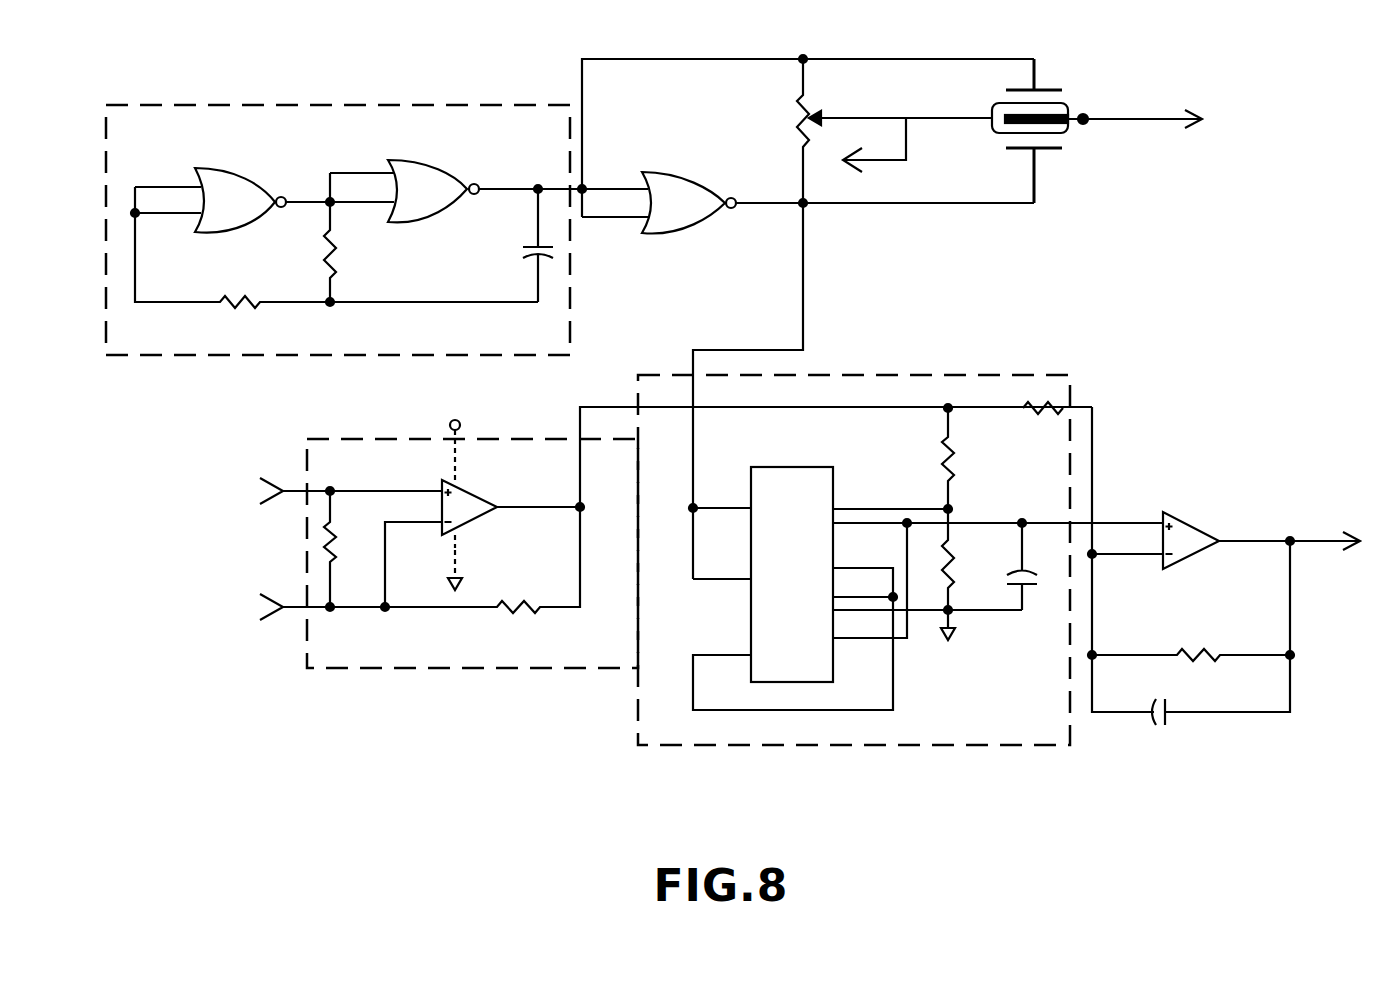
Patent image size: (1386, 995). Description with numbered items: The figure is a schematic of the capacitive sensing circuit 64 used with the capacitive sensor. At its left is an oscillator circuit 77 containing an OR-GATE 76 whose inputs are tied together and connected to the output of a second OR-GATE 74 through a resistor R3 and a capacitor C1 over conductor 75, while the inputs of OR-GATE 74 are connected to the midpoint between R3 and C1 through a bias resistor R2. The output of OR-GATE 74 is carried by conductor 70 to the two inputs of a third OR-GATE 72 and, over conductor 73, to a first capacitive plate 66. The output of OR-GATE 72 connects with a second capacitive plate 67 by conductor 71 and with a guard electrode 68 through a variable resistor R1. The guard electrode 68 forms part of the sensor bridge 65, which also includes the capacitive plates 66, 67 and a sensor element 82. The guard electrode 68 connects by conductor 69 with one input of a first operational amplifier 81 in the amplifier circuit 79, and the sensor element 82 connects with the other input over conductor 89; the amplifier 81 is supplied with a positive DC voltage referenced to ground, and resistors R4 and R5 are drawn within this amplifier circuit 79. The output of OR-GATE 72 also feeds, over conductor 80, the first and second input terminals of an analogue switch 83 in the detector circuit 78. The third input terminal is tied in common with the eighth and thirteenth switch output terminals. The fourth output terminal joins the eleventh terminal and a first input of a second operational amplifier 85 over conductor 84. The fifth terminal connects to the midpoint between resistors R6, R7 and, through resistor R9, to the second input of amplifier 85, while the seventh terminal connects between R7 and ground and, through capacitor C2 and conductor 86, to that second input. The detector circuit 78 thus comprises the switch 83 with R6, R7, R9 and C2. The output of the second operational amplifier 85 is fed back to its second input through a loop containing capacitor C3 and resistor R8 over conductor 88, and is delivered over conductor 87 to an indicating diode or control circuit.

The capacitive sensing circuit 64 is at (1163, 822).
The sensor bridge 65 is at (760, 260).
The first capacitive plate 66 is at (1036, 72).
The second capacitive plate 67 is at (1044, 150).
The guard electrode 68 is at (1003, 102).
The conductor 69 is at (893, 163).
The conductor 70 is at (516, 188).
The conductor 71 is at (898, 206).
The third OR-GATE 72 is at (700, 234).
The conductor 73 is at (690, 58).
The second OR-GATE 74 is at (450, 222).
The conductor 75 is at (432, 305).
The OR-GATE 76 is at (256, 227).
The oscillator circuit 77 is at (172, 339).
The detector circuit 78 is at (985, 727).
The amplifier circuit 79 is at (345, 656).
The conductor 80 is at (805, 288).
The first operational amplifier 81 is at (472, 486).
The sensor element 82 is at (1063, 113).
The analogue switch 83 is at (836, 674).
The conductor 84 is at (978, 522).
The second operational amplifier 85 is at (1186, 515).
The conductor 86 is at (1004, 612).
The conductor 87 is at (1272, 537).
The conductor 88 is at (1203, 708).
The conductor 89 is at (1150, 122).
The variable resistor R1 is at (894, 131).
The bias resistor R2 is at (348, 252).
The resistor R3 is at (232, 262).
The resistor R4 is at (349, 549).
The resistor R5 is at (711, 510).
The resistor R6 is at (968, 458).
The resistor R7 is at (968, 559).
The resistor R8 is at (1191, 601).
The resistor R9 is at (1043, 397).
The capacitor C1 is at (546, 245).
The capacitor C2 is at (1032, 566).
The capacitor C3 is at (1274, 715).